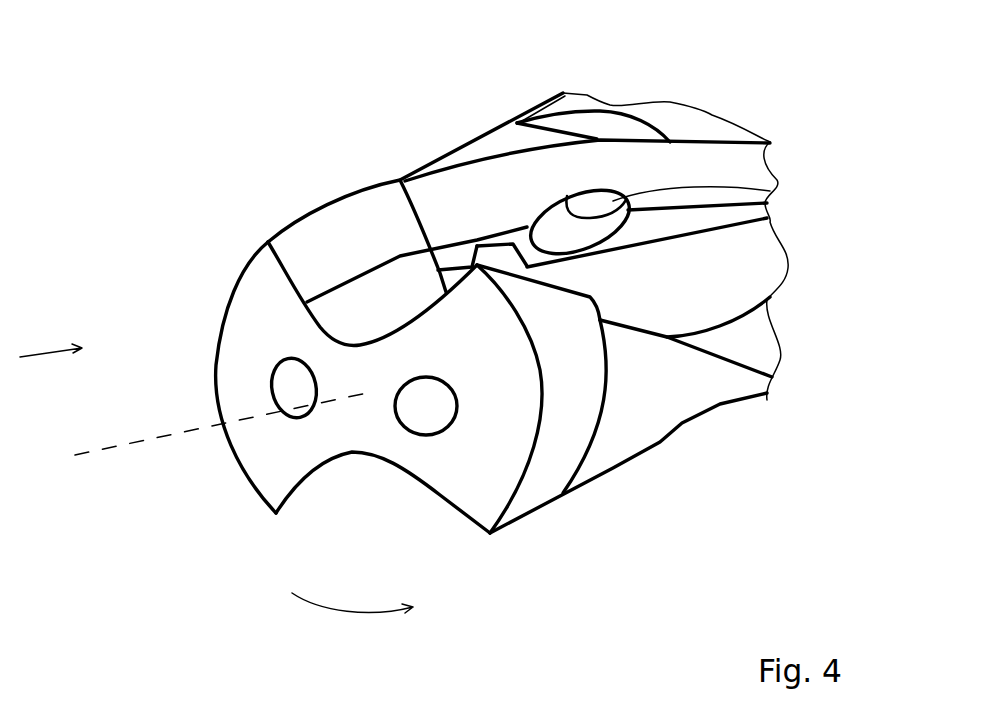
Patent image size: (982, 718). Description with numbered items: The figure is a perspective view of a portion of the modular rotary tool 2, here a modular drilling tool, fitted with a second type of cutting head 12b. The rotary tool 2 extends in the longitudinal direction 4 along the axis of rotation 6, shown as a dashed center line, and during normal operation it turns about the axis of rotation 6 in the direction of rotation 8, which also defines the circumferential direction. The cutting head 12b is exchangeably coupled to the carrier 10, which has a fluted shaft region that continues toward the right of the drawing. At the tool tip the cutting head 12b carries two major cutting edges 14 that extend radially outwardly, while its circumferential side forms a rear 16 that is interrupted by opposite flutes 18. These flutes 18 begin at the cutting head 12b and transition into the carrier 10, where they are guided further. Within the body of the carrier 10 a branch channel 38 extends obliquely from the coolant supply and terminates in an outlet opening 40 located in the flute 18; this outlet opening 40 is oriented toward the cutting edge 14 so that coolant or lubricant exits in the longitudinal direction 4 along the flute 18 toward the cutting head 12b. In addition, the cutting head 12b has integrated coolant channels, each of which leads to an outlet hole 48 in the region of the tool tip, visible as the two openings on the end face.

The rotary tool 2 is at (823, 130).
The longitudinal direction 4 is at (43, 350).
The axis of rotation 6 is at (63, 457).
The direction of rotation 8 is at (363, 618).
The carrier 10 is at (675, 412).
The cutting head 12b is at (233, 333).
The cutting edge 14 is at (357, 348).
The rear 16 is at (550, 473).
The flute 18 is at (392, 287).
The branch channel 38 is at (770, 191).
The outlet opening 40 is at (593, 188).
The outlet hole 48 is at (287, 390).